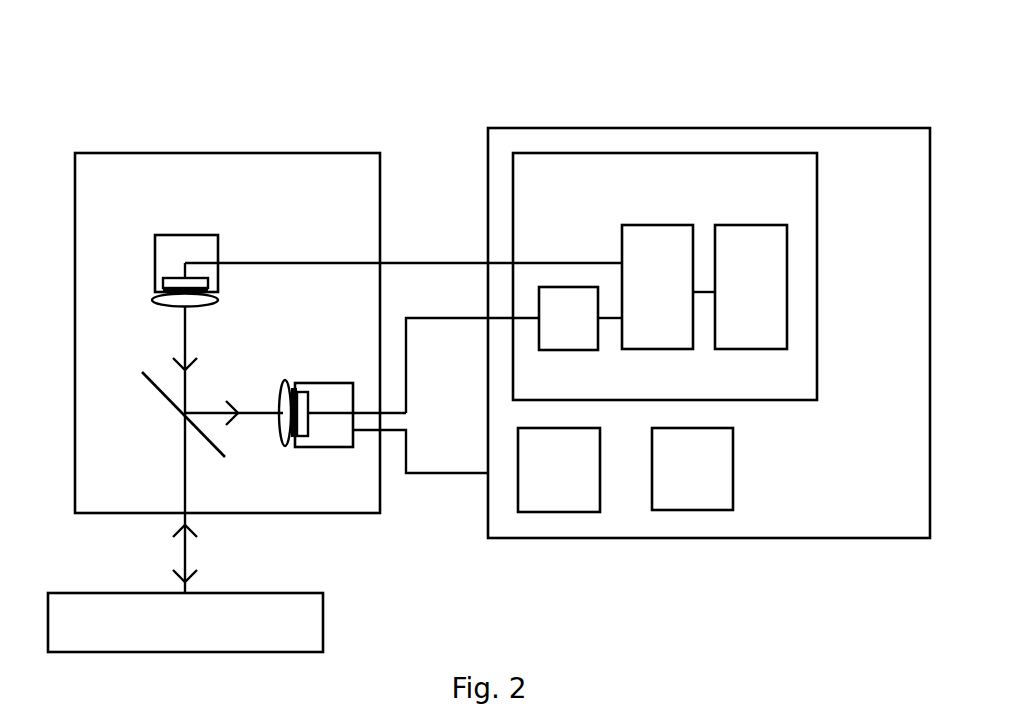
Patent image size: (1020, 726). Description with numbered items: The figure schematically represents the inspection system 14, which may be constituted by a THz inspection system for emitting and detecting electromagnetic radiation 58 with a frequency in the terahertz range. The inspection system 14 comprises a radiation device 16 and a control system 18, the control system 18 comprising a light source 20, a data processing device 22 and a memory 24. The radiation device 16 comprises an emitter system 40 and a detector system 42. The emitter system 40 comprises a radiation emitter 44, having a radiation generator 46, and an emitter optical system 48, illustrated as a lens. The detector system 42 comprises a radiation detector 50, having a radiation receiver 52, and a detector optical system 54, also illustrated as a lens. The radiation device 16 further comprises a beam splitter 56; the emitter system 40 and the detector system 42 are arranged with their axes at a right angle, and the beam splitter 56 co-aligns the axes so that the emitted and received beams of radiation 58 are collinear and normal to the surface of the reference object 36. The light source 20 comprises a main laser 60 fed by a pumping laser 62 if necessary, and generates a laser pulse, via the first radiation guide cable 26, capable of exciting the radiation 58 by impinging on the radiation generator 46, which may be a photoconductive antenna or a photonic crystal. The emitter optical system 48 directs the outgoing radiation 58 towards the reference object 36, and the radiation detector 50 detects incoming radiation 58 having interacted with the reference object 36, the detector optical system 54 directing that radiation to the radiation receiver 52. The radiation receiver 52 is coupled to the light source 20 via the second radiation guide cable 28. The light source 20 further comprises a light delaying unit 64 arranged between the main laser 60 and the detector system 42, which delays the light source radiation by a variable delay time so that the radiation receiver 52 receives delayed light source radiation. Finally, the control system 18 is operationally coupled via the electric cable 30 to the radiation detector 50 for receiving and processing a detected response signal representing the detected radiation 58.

The inspection system 14 is at (210, 85).
The radiation device 16 is at (228, 200).
The control system 18 is at (861, 185).
The light source 20 is at (649, 200).
The data processing device 22 is at (544, 484).
The memory 24 is at (679, 484).
The first radiation guide cable 26 is at (448, 263).
The second radiation guide cable 28 is at (448, 318).
The electric cable 30 is at (448, 473).
The reference object 36 is at (171, 637).
The emitter system 40 is at (158, 220).
The detector system 42 is at (323, 365).
The radiation emitter 44 is at (163, 250).
The radiation generator 46 is at (163, 285).
The emitter optical system 48 is at (160, 305).
The radiation detector 50 is at (338, 437).
The radiation receiver 52 is at (303, 440).
The detector optical system 54 is at (283, 443).
The beam splitter 56 is at (160, 395).
The radiation 58 is at (202, 345).
The main laser 60 is at (643, 304).
The pumping laser 62 is at (736, 304).
The light delaying unit 64 is at (554, 332).